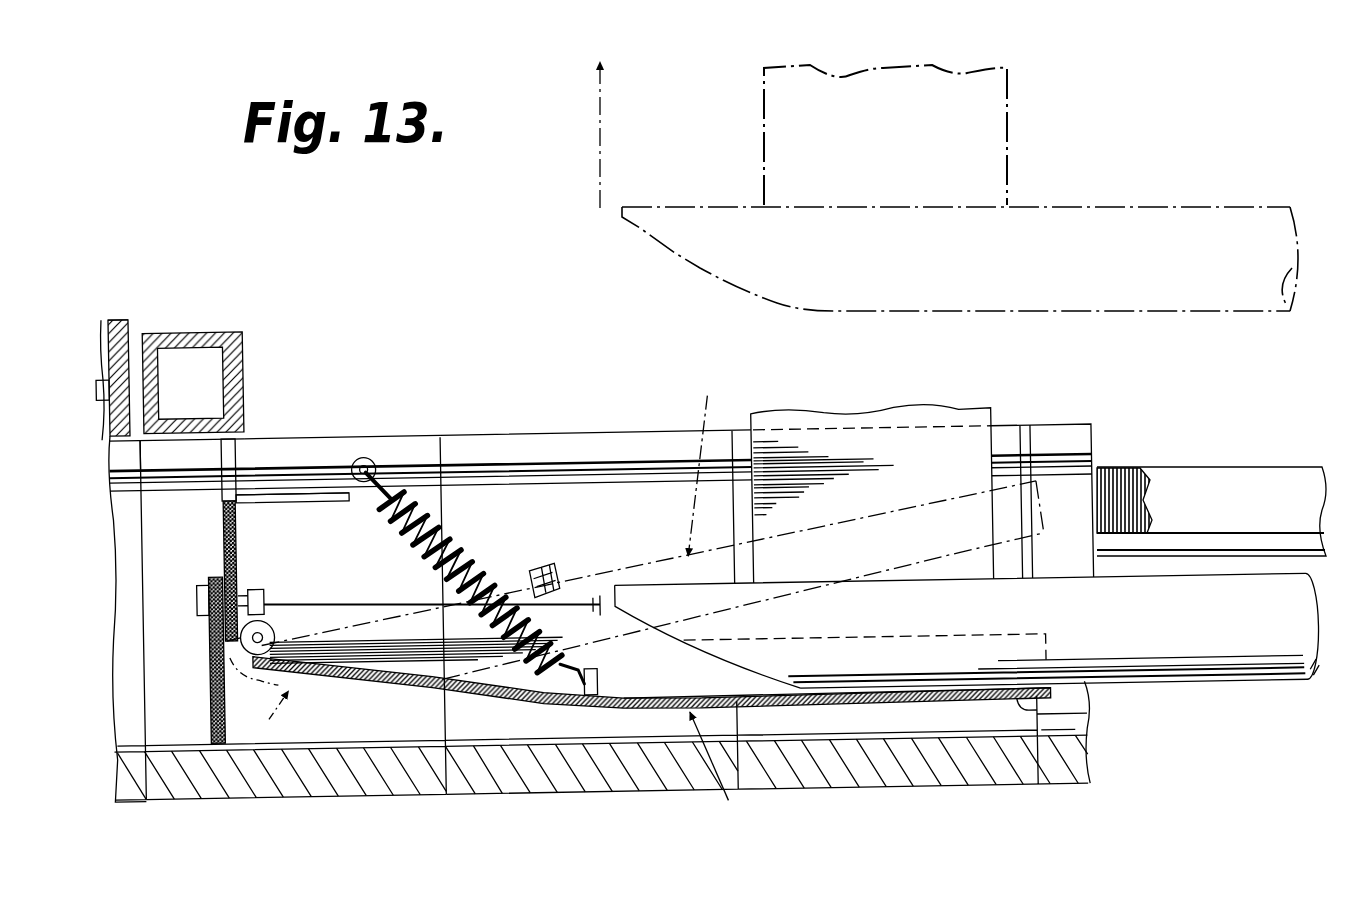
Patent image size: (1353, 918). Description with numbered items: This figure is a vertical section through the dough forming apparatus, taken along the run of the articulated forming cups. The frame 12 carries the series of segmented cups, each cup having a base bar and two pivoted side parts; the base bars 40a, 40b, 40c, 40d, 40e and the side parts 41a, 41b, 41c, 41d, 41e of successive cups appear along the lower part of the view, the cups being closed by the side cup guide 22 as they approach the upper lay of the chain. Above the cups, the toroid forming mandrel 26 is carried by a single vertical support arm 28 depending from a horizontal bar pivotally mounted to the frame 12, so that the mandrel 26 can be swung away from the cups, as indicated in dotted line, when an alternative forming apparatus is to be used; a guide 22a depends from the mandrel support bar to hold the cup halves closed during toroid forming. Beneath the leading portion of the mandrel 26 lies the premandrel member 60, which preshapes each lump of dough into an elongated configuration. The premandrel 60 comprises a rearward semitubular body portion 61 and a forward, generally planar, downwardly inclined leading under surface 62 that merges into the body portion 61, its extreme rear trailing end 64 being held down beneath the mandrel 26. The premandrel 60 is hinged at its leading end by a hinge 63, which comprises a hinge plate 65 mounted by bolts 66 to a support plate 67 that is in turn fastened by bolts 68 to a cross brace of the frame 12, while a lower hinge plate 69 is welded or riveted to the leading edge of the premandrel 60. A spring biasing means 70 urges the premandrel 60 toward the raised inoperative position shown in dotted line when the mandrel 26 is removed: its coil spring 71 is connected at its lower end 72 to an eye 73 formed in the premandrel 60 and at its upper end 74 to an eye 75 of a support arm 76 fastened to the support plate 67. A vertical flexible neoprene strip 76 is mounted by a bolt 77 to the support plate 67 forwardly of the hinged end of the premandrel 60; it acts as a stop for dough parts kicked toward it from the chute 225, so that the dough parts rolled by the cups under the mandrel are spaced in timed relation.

The frame 12 is at (248, 338).
The side cup guide 22 is at (1290, 478).
The guide 22a is at (1192, 538).
The toroid forming mandrel 26 is at (1172, 232).
The single vertical support arm 28 is at (997, 82).
The base section 40a is at (128, 795).
The base section 40b is at (365, 794).
The base section 40c is at (615, 779).
The base section 40d is at (920, 789).
The base section 40e is at (1066, 776).
The guide section 41a is at (133, 457).
The guide section 41b is at (289, 443).
The guide section 41c is at (611, 446).
The guide section 41d is at (1011, 447).
The guide section 41e is at (1086, 452).
The premandrel member 60 is at (705, 609).
The rearward semitubular body portion 61 is at (622, 712).
The leading under surface 62 is at (321, 671).
The hinge 63 is at (278, 633).
The rear trailing end 64 is at (1106, 725).
The hinge plate 65 is at (252, 574).
The bolts 66 is at (265, 601).
The support plate 67 is at (242, 499).
The bolts 68 is at (135, 345).
The lower hinge plate 69 is at (266, 699).
The spring biasing means 70 is at (475, 537).
The coil spring 71 is at (507, 567).
The lower end of coil spring 72 is at (557, 701).
The eye 73 is at (596, 683).
The upper end of coil spring 74 is at (388, 498).
The eye 75 is at (369, 462).
The support arm 76 is at (330, 497).
The bolt 77 is at (203, 597).
The chute 225 is at (118, 335).